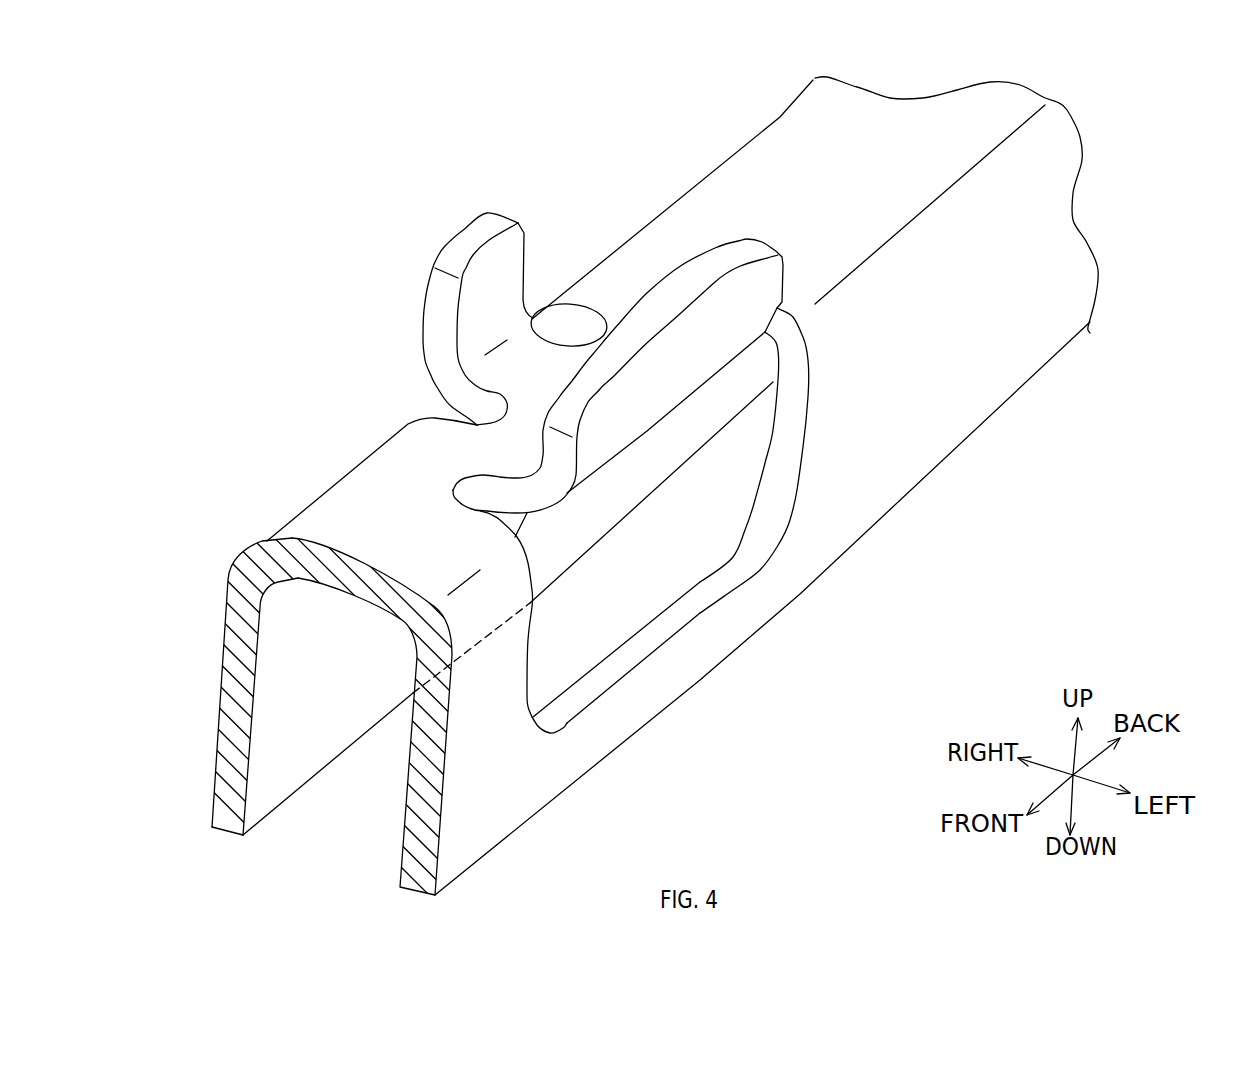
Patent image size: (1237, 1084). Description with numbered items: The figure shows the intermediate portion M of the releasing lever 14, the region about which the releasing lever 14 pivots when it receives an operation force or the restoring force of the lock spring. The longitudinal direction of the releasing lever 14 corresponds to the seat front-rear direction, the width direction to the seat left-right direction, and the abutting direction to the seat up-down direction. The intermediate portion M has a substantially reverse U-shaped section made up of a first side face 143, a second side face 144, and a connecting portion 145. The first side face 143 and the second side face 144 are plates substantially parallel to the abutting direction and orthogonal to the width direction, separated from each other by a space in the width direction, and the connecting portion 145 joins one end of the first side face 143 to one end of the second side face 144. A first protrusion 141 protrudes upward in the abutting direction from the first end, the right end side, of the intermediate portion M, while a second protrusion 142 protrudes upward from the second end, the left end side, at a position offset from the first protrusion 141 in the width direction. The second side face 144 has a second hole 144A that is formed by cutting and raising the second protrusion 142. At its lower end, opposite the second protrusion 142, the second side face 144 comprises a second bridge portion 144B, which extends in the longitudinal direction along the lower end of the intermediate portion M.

The releasing lever 14 is at (628, 235).
The first protrusion 141 is at (503, 213).
The second protrusion 142 is at (700, 252).
The first side face 143 is at (260, 792).
The second side face 144 is at (397, 832).
The second hole 144A is at (657, 575).
The second bridge portion 144B is at (637, 703).
The connecting portion 145 is at (360, 508).
The intermediate portion M is at (395, 278).